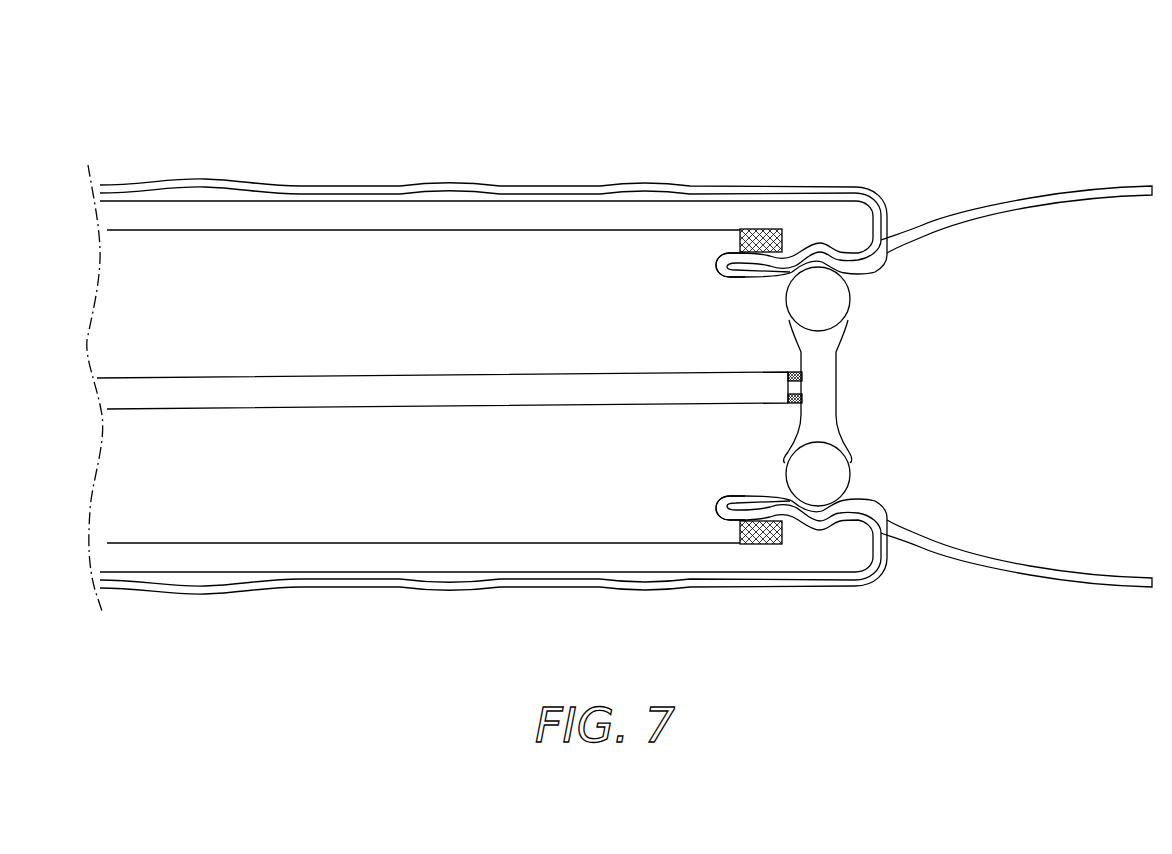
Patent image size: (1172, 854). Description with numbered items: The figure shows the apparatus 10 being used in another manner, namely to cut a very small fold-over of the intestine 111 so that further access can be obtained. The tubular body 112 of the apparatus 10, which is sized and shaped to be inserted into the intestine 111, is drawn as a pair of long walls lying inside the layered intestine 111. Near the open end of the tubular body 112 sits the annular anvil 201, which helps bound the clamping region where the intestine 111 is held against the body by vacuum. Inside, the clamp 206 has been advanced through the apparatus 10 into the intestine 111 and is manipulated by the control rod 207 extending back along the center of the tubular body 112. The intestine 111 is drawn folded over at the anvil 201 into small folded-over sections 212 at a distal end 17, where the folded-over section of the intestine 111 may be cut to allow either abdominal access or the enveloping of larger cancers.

The apparatus 10 is at (618, 100).
The distal end of sheath 17 is at (826, 532).
The intestine 111 is at (345, 185).
The tubular body 112 is at (247, 240).
The anvil 201 is at (767, 229).
The clamp 206 is at (868, 292).
The control rod 207 is at (685, 415).
The folded tab 212 is at (731, 274).